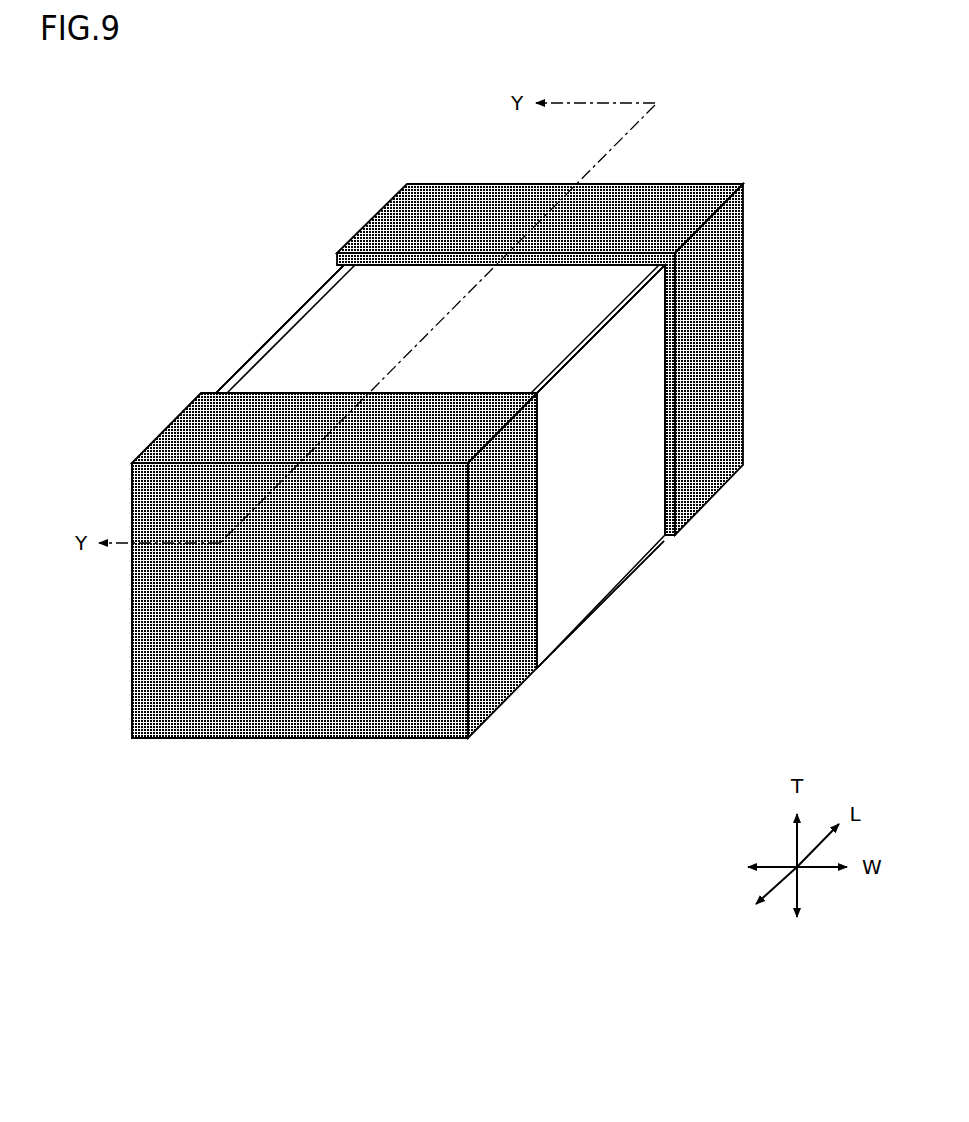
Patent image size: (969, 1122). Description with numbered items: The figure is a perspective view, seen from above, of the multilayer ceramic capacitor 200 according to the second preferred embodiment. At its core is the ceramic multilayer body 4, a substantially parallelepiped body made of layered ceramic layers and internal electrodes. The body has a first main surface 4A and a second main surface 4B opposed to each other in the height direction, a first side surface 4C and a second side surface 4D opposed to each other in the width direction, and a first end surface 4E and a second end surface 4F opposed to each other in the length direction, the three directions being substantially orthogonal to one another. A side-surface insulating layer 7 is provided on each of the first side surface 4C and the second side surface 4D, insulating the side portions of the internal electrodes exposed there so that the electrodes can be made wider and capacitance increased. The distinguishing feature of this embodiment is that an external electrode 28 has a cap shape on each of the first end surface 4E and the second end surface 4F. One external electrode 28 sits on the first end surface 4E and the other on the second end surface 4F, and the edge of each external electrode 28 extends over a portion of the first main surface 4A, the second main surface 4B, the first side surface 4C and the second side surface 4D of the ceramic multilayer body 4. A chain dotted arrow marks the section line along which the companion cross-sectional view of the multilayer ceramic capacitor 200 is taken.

The multilayer ceramic capacitor 200 is at (135, 150).
The external electrode 28 is at (477, 222).
The ceramic multilayer body 4 is at (393, 293).
The side-surface insulating layer 7 is at (300, 312).
The first main surface 4A is at (598, 605).
The second main surface 4B is at (390, 341).
The first side surface 4C is at (609, 458).
The second side surface 4D is at (229, 349).
The first end surface 4E is at (289, 595).
The second end surface 4F is at (615, 167).